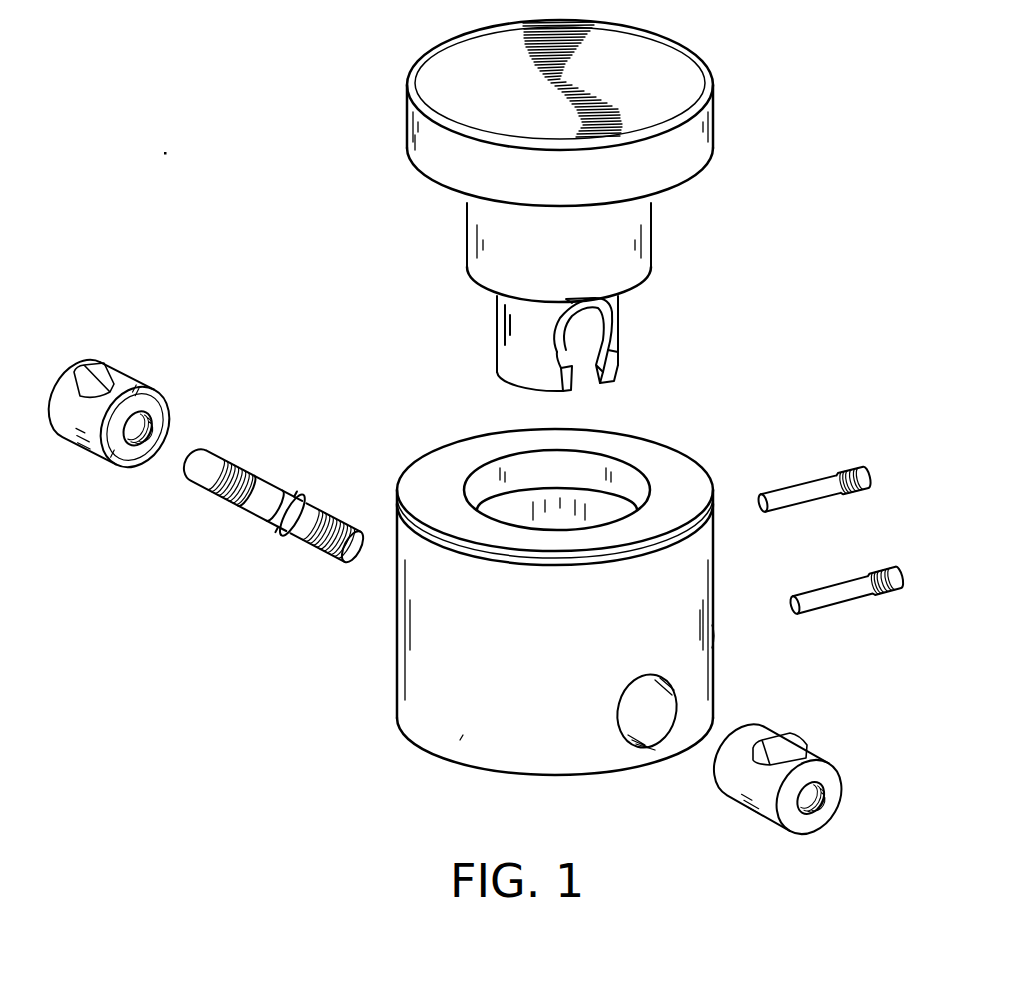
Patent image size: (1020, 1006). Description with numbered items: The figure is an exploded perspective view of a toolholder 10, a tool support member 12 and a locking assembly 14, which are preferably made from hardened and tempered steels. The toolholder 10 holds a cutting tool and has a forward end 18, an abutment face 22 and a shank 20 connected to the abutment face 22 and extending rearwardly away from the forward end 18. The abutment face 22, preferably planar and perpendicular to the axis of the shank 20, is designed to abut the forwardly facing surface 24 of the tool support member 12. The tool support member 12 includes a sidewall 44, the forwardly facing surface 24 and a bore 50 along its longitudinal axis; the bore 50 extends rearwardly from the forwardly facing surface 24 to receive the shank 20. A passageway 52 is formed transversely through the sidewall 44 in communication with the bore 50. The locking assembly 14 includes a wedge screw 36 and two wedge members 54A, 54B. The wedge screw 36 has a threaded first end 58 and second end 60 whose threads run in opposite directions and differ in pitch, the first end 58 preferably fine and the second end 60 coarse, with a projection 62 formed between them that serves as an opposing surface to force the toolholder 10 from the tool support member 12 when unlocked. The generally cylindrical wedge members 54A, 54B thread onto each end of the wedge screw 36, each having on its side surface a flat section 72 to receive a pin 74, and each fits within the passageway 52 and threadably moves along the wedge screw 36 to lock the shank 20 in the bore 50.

The toolholder 10 is at (575, 205).
The tool support member 12 is at (505, 607).
The locking assembly 14 is at (255, 500).
The forward end 18 is at (716, 114).
The shank 20 is at (652, 262).
The abutment face 22 is at (440, 200).
The forwardly facing surface 24 is at (668, 468).
The wedge screw 36 is at (243, 472).
The sidewall 44 is at (463, 740).
The bore 50 is at (533, 465).
The passageway 52 is at (640, 748).
The wedge member 54A is at (123, 394).
The wedge member 54B is at (775, 748).
The first end 58 is at (195, 472).
The second end 60 is at (330, 556).
The projection 62 is at (300, 500).
The flat section 72 is at (95, 372).
The pin 74 is at (795, 485).